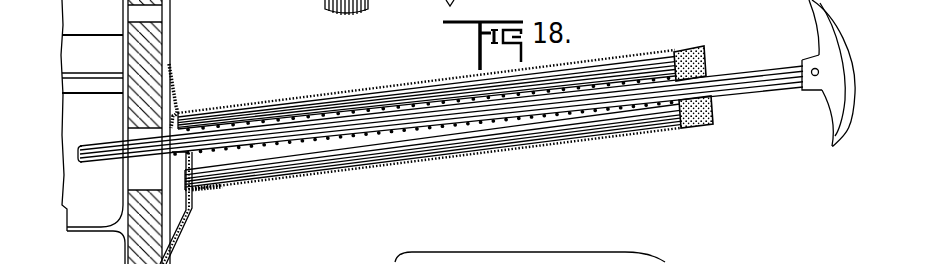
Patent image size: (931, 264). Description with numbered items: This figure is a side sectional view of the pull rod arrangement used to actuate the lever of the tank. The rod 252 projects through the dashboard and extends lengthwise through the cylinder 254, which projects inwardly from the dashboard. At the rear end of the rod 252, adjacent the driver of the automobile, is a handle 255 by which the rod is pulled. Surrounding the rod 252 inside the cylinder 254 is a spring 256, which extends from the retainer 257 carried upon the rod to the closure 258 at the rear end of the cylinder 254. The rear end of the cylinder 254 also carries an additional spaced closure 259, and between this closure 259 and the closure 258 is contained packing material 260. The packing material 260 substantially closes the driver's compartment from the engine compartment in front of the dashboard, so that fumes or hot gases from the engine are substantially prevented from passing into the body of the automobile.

The rod 252 is at (283, 126).
The cylinder 254 is at (625, 60).
The handle 255 is at (819, 20).
The spring 256 is at (358, 110).
The retainer 257 is at (180, 105).
The closure 258 is at (685, 133).
The additional spaced closure 259 is at (707, 62).
The packing material 260 is at (708, 125).